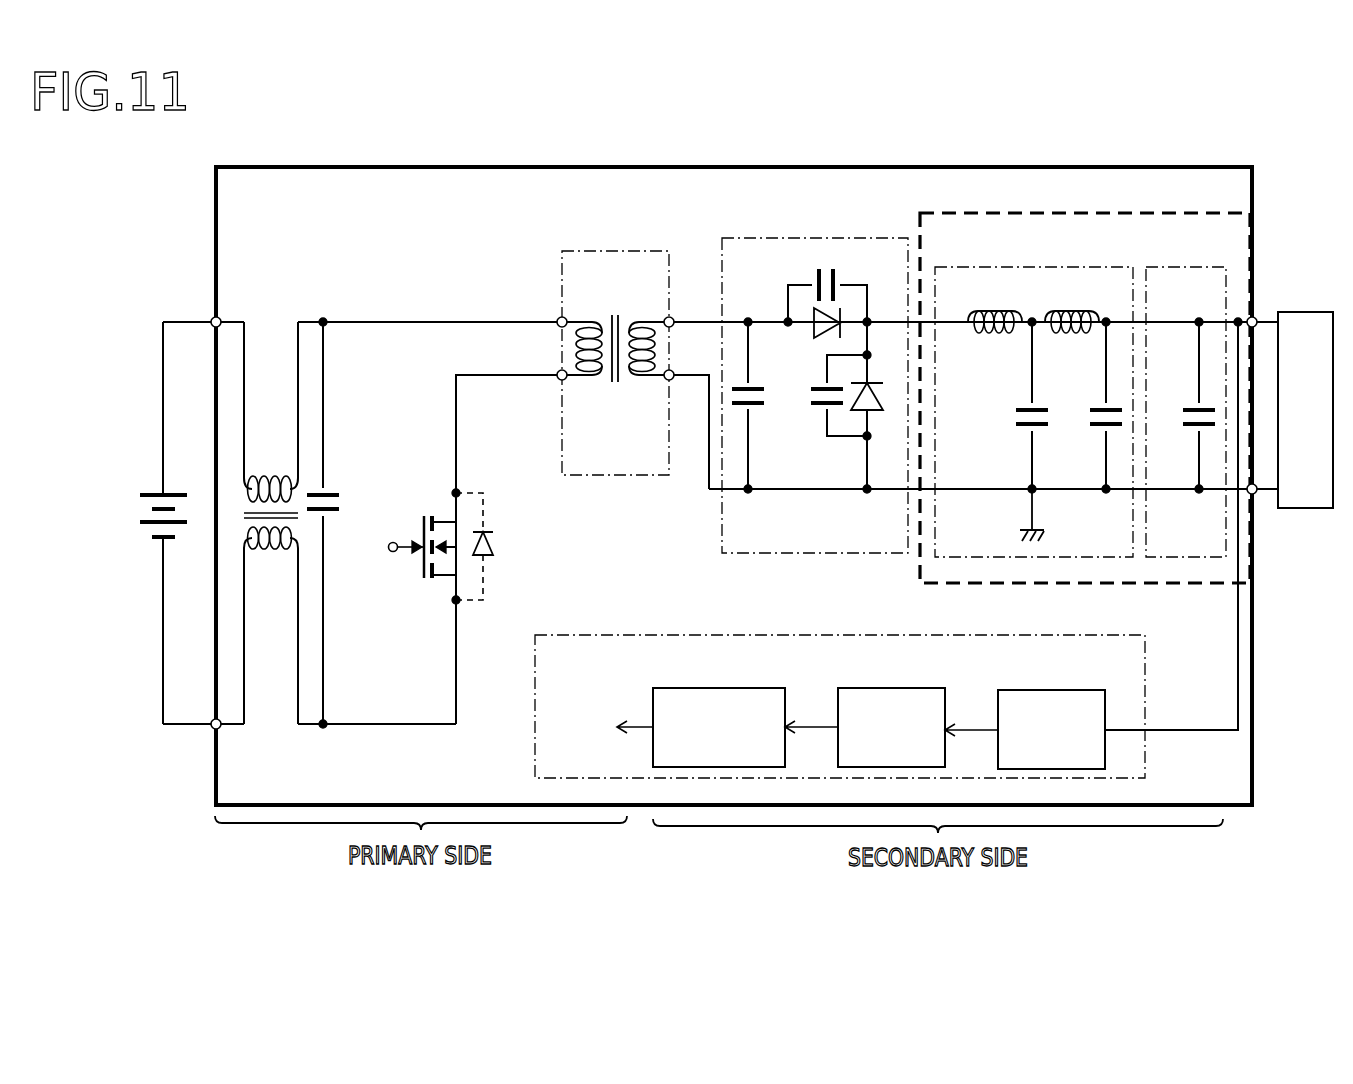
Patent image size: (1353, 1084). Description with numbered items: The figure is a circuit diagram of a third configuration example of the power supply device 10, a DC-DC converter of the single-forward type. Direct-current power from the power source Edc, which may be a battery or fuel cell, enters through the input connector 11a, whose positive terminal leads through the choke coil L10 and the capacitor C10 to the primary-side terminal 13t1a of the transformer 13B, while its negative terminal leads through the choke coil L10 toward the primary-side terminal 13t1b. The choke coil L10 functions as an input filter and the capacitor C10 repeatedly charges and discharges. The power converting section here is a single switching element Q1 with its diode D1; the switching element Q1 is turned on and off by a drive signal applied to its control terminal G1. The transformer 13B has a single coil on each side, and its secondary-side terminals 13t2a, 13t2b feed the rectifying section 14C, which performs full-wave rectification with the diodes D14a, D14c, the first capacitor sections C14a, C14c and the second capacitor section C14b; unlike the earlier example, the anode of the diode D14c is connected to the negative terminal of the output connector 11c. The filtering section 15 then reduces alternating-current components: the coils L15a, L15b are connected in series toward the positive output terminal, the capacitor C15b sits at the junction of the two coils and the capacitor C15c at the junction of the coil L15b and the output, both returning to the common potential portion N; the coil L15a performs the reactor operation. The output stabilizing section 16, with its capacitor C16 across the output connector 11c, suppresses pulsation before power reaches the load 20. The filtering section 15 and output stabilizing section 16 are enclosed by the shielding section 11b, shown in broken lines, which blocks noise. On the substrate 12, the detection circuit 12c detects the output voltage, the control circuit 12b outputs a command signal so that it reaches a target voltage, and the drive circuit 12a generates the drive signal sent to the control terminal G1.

The power supply device 10 is at (487, 167).
The input connector 11a is at (213, 318).
The shielding section 11b is at (1081, 585).
The output connector 11c is at (1250, 318).
The substrate 12 is at (840, 685).
The drive circuit 12a is at (710, 688).
The control circuit 12b is at (895, 688).
The detection circuit 12c is at (1052, 690).
The transformer 13B is at (592, 250).
The primary-side terminal 13t1a is at (559, 318).
The primary-side terminal 13t1b is at (559, 379).
The secondary-side terminal 13t2a is at (672, 318).
The secondary-side terminal 13t2b is at (667, 379).
The rectifying section 14C is at (815, 381).
The filtering section 15 is at (1034, 396).
The output stabilizing section 16 is at (1182, 396).
The load 20 is at (1308, 312).
The power source Edc is at (143, 523).
The choke coil L10 is at (271, 523).
The capacitor C10 is at (345, 523).
The switching element Q1 is at (428, 543).
The diode D1 is at (490, 546).
The control terminal G1 is at (389, 551).
The first capacitor section C14a is at (827, 284).
The second capacitor section C14b is at (770, 405).
The first capacitor section C14c is at (834, 408).
The diode D14a is at (801, 340).
The diode D14c is at (877, 413).
The coil L15a is at (990, 306).
The coil L15b is at (1068, 306).
The capacitor C15b is at (1017, 405).
The capacitor C15c is at (1091, 405).
The capacitor C16 is at (1184, 405).
The common potential portion N is at (1044, 517).